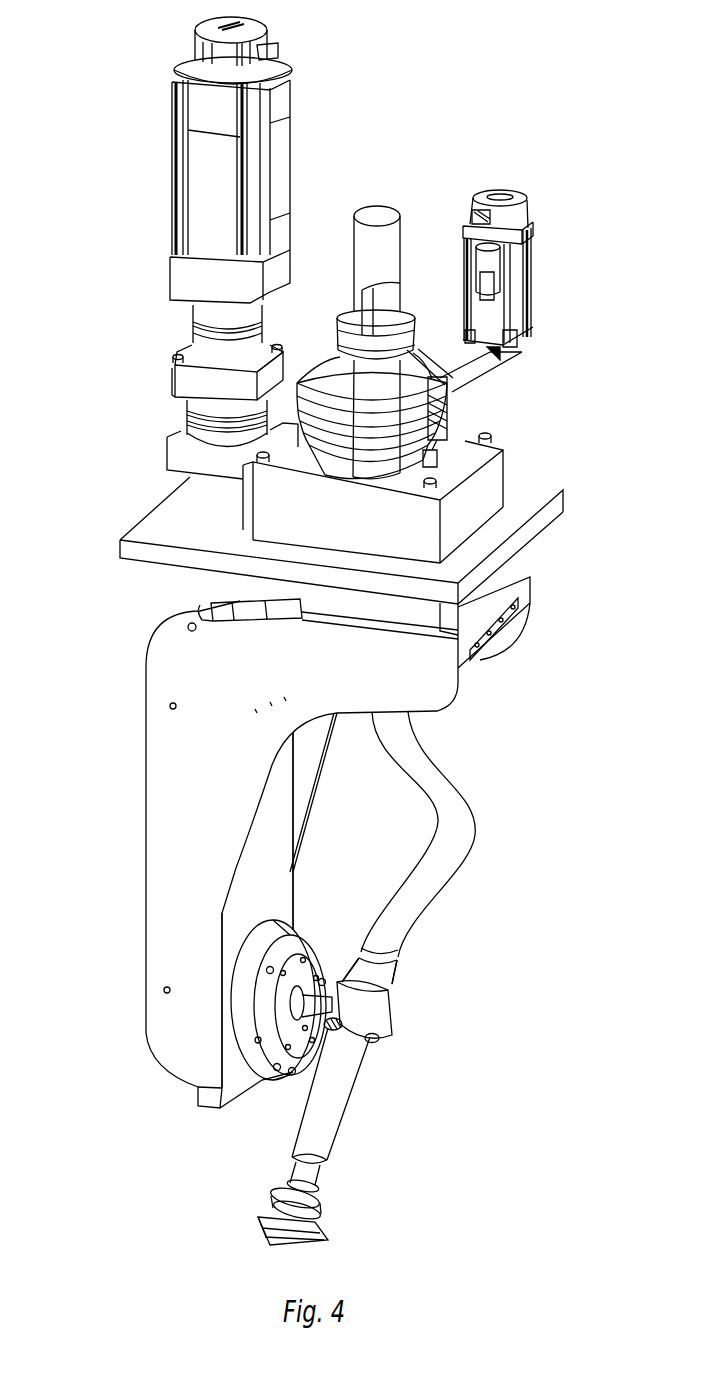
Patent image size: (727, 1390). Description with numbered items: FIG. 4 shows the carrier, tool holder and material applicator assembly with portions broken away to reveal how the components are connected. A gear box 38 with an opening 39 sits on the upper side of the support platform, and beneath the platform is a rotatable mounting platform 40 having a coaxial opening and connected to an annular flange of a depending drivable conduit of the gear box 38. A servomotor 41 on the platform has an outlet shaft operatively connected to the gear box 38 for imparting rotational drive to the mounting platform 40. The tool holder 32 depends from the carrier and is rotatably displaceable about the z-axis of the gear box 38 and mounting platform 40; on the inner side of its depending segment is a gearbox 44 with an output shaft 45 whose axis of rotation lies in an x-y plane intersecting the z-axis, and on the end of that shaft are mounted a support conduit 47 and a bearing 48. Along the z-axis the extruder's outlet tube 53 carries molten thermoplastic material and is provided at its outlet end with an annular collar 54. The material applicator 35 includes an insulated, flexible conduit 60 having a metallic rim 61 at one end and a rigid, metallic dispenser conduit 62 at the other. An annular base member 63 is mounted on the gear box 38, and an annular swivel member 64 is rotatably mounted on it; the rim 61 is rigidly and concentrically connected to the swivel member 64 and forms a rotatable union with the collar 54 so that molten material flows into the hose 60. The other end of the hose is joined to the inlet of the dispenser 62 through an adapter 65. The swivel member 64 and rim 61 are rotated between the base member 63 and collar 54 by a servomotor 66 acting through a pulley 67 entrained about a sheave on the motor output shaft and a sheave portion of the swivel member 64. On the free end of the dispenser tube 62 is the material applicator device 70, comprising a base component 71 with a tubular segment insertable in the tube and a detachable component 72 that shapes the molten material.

The tool holder 32 is at (142, 814).
The material applicator 35 is at (494, 897).
The gear box 38 is at (488, 480).
The opening 39 is at (528, 527).
The rotatable mounting platform 40 is at (510, 567).
The servomotor 41 is at (176, 184).
The gearbox 44 is at (292, 934).
The output shaft 45 is at (324, 935).
The support conduit 47 is at (388, 1004).
The bearing 48 is at (372, 1040).
The outlet tube 53 is at (357, 263).
The annular collar 54 is at (424, 324).
The flexible conduit 60 is at (472, 848).
The metallic rim 61 is at (342, 346).
The dispenser conduit 62 is at (344, 1117).
The annular base member 63 is at (252, 500).
The annular swivel member 64 is at (464, 369).
The adapter 65 is at (400, 960).
The servomotor 66 is at (530, 266).
The pulley 67 is at (298, 412).
The material applicator device 70 is at (277, 1190).
The base component 71 is at (321, 1190).
The detachable component 72 is at (258, 1216).